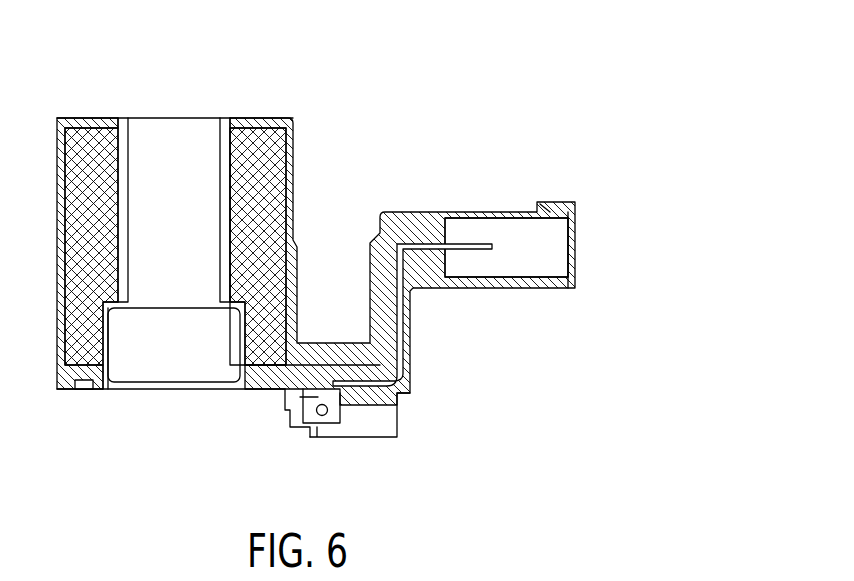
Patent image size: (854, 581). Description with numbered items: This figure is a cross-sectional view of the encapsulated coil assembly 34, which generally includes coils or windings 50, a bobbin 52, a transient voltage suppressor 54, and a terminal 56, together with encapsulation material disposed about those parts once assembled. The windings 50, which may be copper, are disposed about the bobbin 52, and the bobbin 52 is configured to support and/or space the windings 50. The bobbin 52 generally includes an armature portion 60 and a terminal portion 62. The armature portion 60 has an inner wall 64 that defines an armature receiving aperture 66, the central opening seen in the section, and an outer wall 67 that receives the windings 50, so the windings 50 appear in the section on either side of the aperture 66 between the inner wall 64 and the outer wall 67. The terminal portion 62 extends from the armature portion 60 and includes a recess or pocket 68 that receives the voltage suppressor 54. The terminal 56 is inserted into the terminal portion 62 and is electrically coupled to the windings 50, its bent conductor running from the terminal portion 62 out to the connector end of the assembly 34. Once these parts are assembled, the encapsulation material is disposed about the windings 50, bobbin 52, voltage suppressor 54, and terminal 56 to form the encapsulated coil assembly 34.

The encapsulated coil assembly 34 is at (463, 83).
The windings 50 is at (82, 240).
The bobbin 52 is at (212, 128).
The transient voltage suppressor 54 is at (322, 430).
The terminal 56 is at (420, 240).
The armature portion 60 is at (288, 96).
The terminal portion 62 is at (257, 399).
The inner wall 64 is at (140, 128).
The armature receiving aperture 66 is at (166, 143).
The outer wall 67 is at (90, 193).
The pocket 68 is at (310, 424).